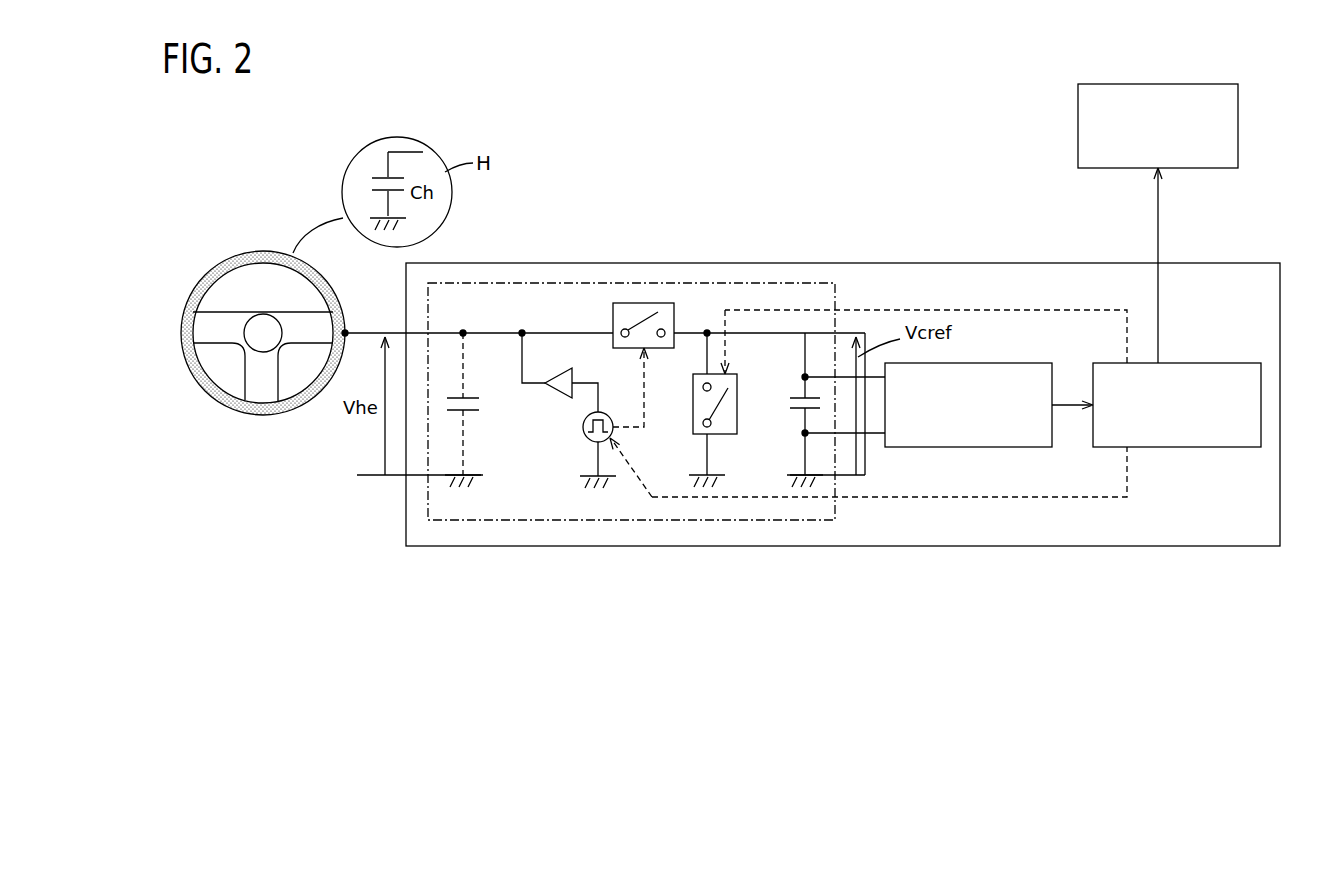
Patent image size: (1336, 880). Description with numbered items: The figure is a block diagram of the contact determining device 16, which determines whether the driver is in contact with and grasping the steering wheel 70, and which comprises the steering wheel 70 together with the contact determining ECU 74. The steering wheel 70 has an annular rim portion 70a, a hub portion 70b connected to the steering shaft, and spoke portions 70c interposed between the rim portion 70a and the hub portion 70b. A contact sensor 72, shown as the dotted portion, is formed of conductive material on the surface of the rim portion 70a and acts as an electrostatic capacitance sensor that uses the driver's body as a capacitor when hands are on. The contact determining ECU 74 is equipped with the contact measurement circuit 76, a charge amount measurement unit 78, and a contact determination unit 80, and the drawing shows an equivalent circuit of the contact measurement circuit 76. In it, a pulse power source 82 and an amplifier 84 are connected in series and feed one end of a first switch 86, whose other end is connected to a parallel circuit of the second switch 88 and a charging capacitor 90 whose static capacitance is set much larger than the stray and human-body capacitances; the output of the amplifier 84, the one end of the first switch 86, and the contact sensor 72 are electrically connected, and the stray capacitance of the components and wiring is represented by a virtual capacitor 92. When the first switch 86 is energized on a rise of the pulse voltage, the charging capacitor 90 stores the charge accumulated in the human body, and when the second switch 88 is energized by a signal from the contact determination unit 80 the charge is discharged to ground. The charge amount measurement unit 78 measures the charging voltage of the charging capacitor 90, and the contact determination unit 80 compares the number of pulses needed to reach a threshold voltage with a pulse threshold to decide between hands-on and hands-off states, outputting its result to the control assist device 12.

The control assist device 12 is at (1163, 83).
The contact determining device 16 is at (764, 252).
The steering wheel 70 is at (242, 316).
The rim portion 70a is at (193, 383).
The hub portion 70b is at (262, 326).
The spoke portions 70c is at (208, 320).
The contact sensor 72 is at (181, 331).
The contact determining ECU 74 is at (944, 262).
The contact measurement circuit 76 is at (497, 283).
The charge amount measurement unit 78 is at (925, 447).
The contact determination unit 80 is at (1180, 447).
The pulse power source 82 is at (587, 432).
The amplifier 84 is at (560, 370).
The first switch 86 is at (613, 311).
The second switch 88 is at (690, 395).
The charging capacitor 90 is at (790, 402).
The virtual capacitor 92 is at (468, 410).